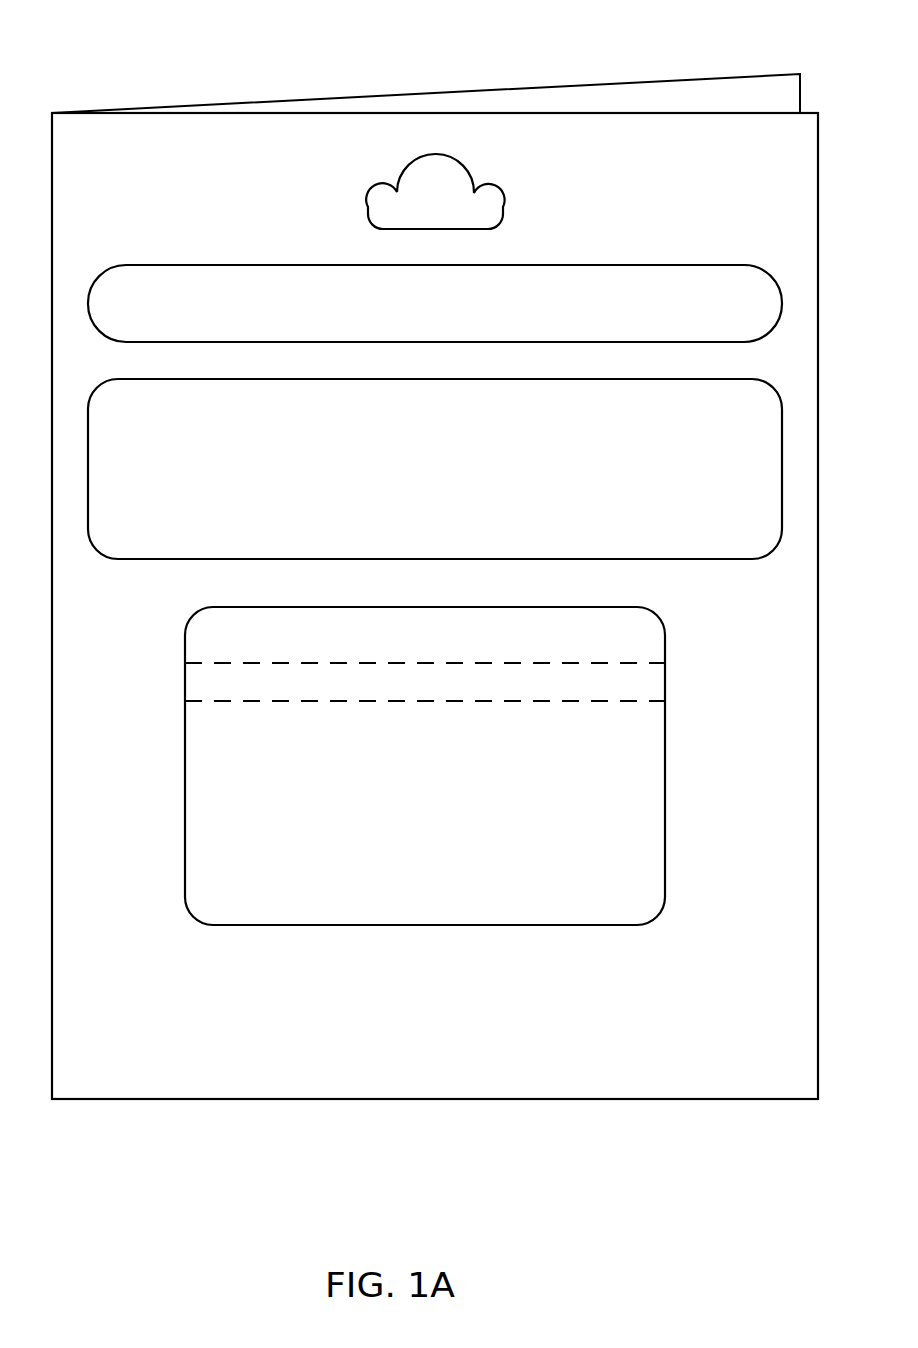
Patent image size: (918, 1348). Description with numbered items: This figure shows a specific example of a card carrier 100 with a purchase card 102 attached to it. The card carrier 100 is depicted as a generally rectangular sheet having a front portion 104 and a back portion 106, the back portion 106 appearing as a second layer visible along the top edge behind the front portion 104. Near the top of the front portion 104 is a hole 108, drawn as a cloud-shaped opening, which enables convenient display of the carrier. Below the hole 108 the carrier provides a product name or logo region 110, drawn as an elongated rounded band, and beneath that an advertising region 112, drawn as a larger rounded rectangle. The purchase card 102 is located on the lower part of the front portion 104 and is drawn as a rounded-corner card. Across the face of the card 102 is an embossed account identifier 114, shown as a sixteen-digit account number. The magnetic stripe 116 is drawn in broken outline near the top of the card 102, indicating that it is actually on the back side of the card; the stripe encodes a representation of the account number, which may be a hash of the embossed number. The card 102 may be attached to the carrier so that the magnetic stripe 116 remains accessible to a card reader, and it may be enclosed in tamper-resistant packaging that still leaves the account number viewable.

The card carrier 100 is at (435, 581).
The purchase card 102 is at (467, 797).
The front portion 104 is at (769, 164).
The back portion 106 is at (548, 86).
The hole 108 is at (504, 204).
The product name or logo region 110 is at (740, 321).
The advertising region 112 is at (740, 538).
The embossed account identifier 114 is at (546, 794).
The magnetic stripe 116 is at (645, 693).